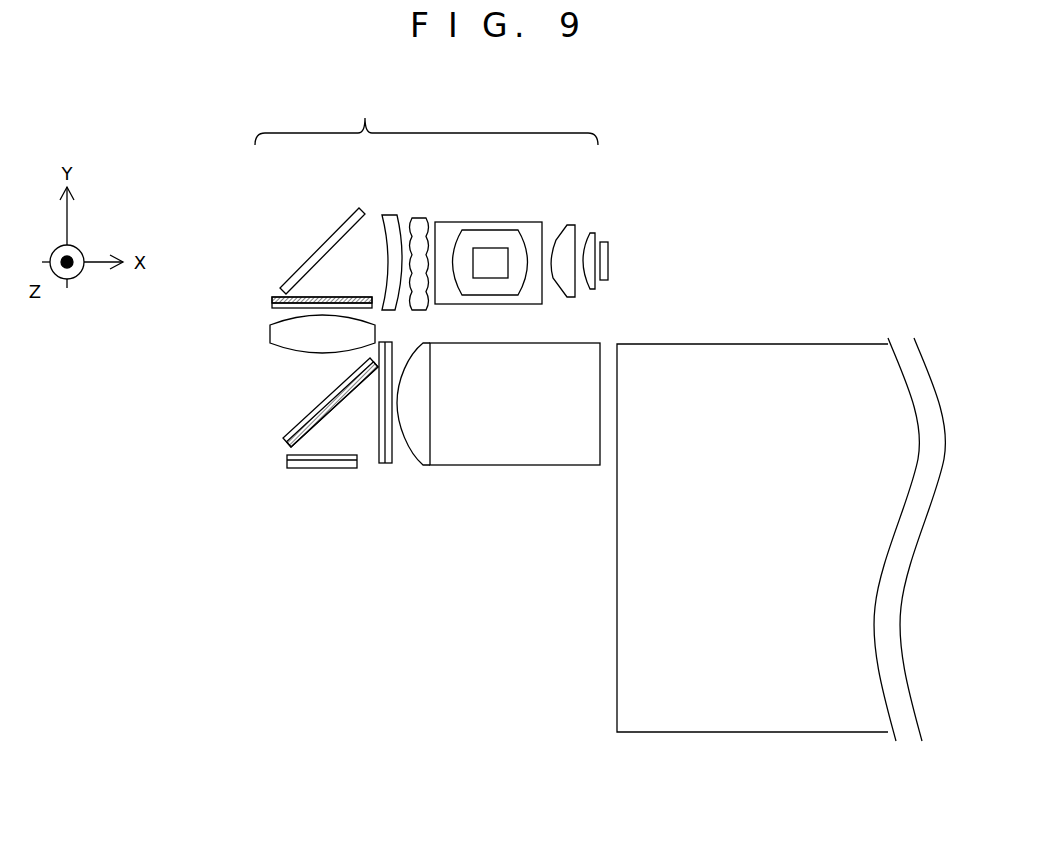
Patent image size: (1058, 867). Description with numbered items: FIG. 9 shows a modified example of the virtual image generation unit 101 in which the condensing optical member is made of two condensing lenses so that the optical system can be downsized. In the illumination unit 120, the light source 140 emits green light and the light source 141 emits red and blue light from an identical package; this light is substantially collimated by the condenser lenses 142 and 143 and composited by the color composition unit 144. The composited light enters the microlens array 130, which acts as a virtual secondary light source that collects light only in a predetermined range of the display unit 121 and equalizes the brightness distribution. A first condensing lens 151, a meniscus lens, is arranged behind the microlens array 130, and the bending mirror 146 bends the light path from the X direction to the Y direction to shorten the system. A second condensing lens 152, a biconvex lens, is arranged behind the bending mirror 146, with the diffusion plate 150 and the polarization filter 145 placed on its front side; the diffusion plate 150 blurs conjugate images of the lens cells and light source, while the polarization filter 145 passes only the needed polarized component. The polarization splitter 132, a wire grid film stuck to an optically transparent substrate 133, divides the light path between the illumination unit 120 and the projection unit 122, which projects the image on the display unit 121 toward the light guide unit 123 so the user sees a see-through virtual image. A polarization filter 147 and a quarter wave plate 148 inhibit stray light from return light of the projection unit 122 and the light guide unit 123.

The virtual image generation unit 101 is at (758, 111).
The illumination unit 120 is at (426, 115).
The display unit 121 is at (312, 468).
The projection unit 122 is at (517, 457).
The light guide unit 123 is at (769, 347).
The microlens array 130 is at (418, 217).
The polarization splitter 132 is at (328, 408).
The optically transparent substrate 133 is at (307, 412).
The light source 140 is at (608, 260).
The light source 141 is at (496, 256).
The condenser lens 142 is at (594, 238).
The condenser lens 143 is at (573, 225).
The color composition unit 144 is at (480, 222).
The polarization filter 145 is at (272, 306).
The bending mirror 146 is at (315, 252).
The polarization filter 147 is at (380, 464).
The quarter wave plate 148 is at (392, 463).
The diffusion plate 150 is at (272, 298).
The first condensing lens 151 is at (380, 213).
The second condensing lens 152 is at (275, 336).